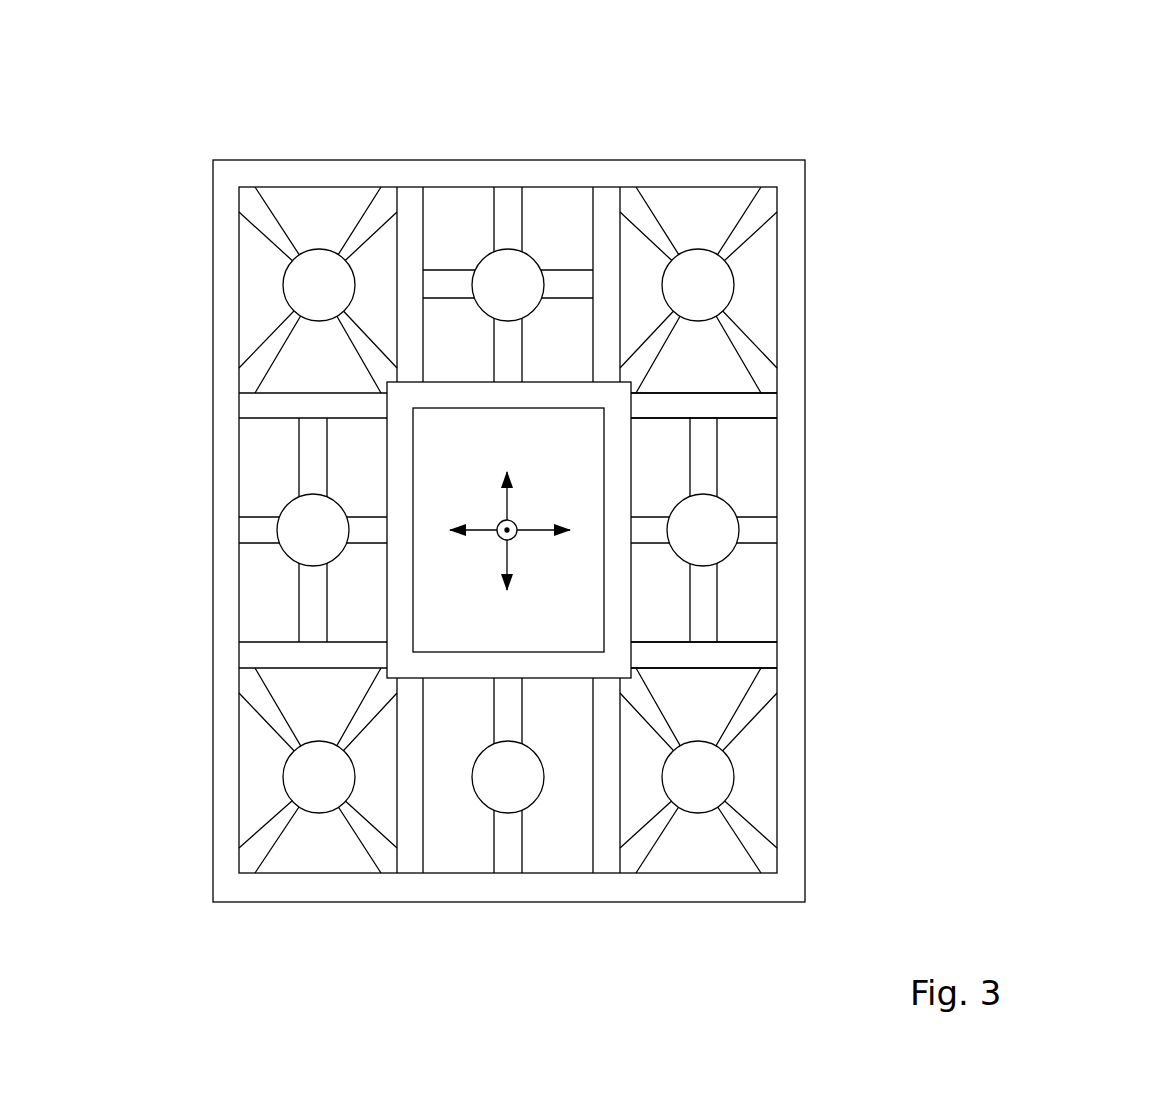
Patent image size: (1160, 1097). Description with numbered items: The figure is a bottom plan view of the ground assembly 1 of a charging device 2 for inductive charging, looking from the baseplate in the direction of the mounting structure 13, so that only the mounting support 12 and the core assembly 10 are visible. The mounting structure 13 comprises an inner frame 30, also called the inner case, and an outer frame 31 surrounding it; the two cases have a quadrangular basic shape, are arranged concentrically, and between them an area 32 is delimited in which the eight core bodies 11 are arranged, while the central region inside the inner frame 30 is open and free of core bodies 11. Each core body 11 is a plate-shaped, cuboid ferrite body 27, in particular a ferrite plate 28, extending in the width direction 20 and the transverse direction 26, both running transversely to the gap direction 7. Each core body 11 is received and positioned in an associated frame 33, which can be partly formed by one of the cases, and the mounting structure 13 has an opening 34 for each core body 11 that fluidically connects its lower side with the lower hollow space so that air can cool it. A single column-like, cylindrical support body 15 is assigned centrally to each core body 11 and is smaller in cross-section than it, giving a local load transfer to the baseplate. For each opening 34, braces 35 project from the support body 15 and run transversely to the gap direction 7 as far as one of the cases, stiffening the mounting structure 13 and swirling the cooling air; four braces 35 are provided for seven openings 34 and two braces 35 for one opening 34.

The ground assembly 1 is at (243, 115).
The charging device 2 is at (903, 142).
The gap direction 7 is at (497, 540).
The core assembly 10 is at (800, 135).
The core body 11 is at (318, 200).
The mounting support 12 is at (845, 210).
The mounting structure 13 is at (805, 360).
The support body 15 is at (332, 298).
The width direction 20 is at (510, 502).
The transverse direction 26 is at (537, 535).
The ferrite body 27 is at (510, 522).
The ferrite plate 28 is at (510, 522).
The inner frame 30 is at (416, 449).
The outer frame 31 is at (805, 410).
The area 32 is at (748, 452).
The frame 33 is at (505, 158).
The opening 34 is at (455, 200).
The brace 35 is at (275, 244).